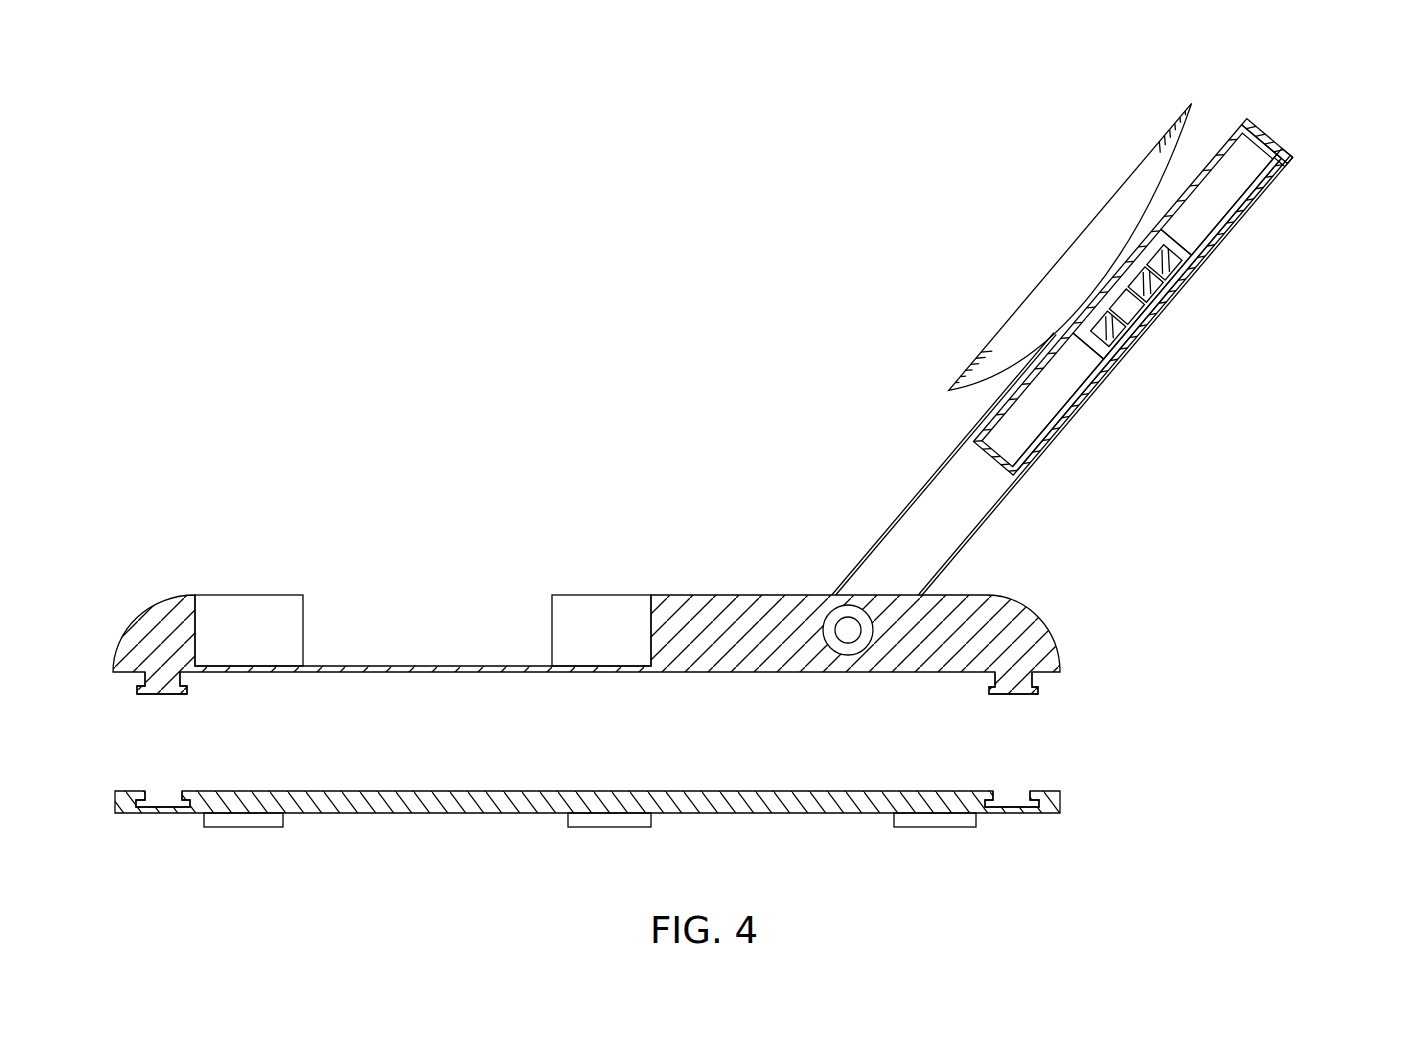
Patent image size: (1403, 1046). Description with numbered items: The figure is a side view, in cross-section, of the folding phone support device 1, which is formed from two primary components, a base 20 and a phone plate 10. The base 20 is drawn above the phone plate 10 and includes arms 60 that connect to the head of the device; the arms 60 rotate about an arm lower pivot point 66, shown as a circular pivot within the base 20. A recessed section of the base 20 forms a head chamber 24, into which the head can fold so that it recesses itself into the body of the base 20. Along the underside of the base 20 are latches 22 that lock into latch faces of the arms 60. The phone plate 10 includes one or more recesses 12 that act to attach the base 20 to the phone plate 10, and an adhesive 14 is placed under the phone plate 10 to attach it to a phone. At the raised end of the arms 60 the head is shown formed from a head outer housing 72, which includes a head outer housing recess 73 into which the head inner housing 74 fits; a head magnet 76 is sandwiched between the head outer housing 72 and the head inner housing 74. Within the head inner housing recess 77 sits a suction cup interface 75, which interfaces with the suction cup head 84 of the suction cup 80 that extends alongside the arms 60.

The folding phone support device 1 is at (505, 362).
The phone plate 10 is at (478, 793).
The recess 12 is at (165, 807).
The adhesive 14 is at (243, 828).
The base 20 is at (1055, 620).
The latch 22 is at (165, 693).
The head chamber 24 is at (402, 640).
The arm 60 is at (960, 528).
The arm lower pivot point 66 is at (846, 624).
The head outer housing 72 is at (1296, 160).
The head outer housing recess 73 is at (1283, 150).
The head inner housing 74 is at (1238, 130).
The suction cup interface 75 is at (1130, 345).
The head magnet 76 is at (1170, 277).
The head inner housing recess 77 is at (1222, 193).
The suction cup 80 is at (1200, 118).
The suction cup head 84 is at (1205, 258).